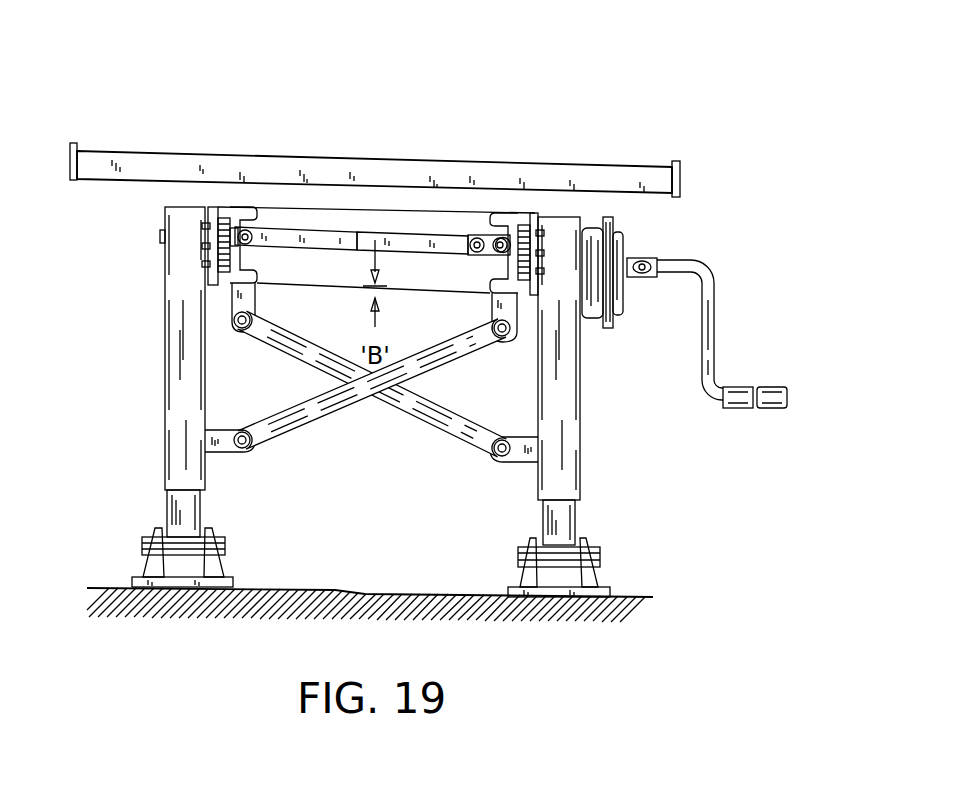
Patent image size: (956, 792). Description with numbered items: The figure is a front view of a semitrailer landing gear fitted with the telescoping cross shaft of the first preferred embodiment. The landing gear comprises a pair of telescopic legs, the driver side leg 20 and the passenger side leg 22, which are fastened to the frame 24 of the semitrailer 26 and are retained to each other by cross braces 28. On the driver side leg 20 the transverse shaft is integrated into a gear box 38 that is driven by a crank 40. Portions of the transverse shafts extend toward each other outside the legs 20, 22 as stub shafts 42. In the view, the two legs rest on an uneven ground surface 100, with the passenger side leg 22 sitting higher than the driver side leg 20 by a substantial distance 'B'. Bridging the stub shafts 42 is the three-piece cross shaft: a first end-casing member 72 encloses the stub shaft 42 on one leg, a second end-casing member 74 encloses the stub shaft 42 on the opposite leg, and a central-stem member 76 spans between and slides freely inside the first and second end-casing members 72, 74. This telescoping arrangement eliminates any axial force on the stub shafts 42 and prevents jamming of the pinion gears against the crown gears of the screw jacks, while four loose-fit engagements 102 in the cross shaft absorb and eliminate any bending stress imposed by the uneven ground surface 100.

The driver side leg 20 is at (582, 462).
The passenger side leg 22 is at (163, 398).
The frame 24 is at (227, 290).
The semitrailer 26 is at (120, 184).
The cross braces 28 is at (390, 403).
The gear box 38 is at (622, 300).
The crank 40 is at (700, 373).
The stub shafts 42 is at (240, 228).
The first end-casing member 72 is at (305, 250).
The second end-casing member 74 is at (485, 256).
The central-stem member 76 is at (400, 256).
The uneven ground surface 100 is at (345, 592).
The loose-fit engagements 102 is at (255, 225).